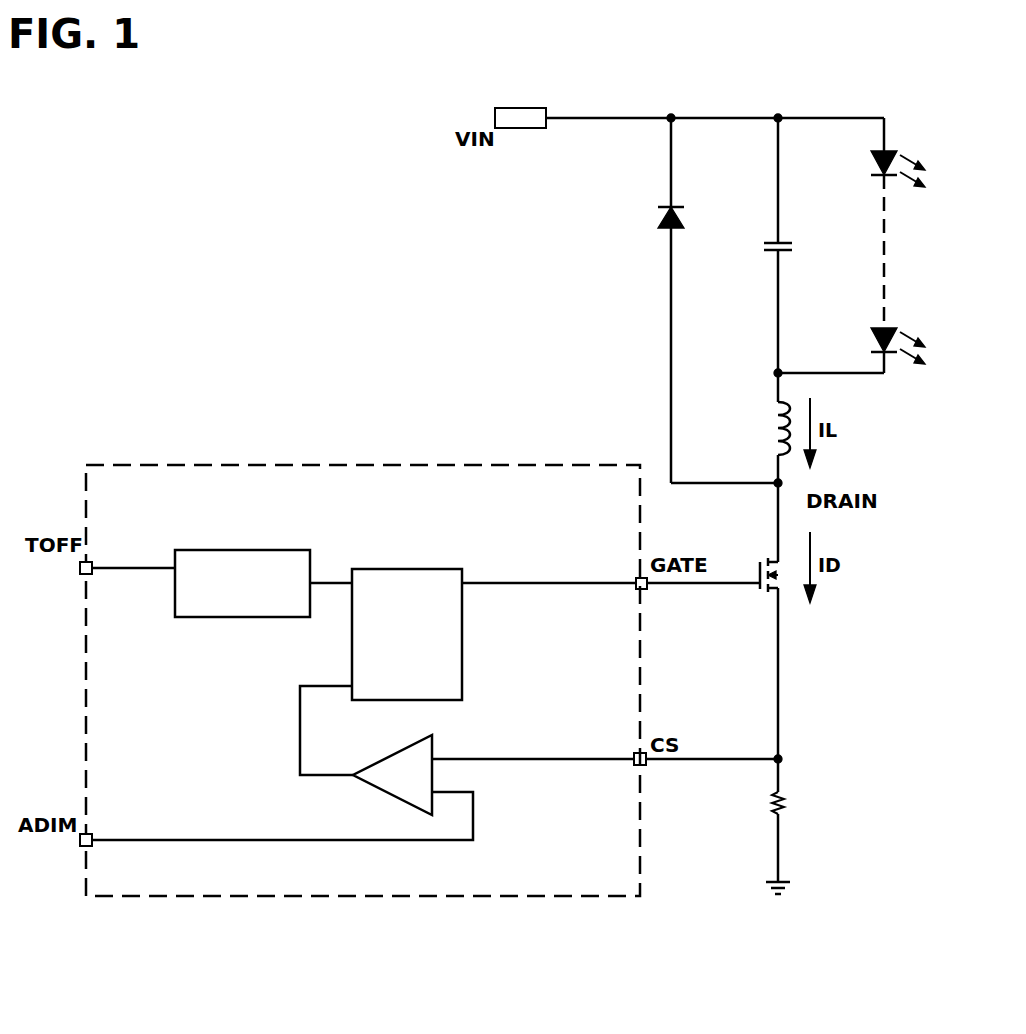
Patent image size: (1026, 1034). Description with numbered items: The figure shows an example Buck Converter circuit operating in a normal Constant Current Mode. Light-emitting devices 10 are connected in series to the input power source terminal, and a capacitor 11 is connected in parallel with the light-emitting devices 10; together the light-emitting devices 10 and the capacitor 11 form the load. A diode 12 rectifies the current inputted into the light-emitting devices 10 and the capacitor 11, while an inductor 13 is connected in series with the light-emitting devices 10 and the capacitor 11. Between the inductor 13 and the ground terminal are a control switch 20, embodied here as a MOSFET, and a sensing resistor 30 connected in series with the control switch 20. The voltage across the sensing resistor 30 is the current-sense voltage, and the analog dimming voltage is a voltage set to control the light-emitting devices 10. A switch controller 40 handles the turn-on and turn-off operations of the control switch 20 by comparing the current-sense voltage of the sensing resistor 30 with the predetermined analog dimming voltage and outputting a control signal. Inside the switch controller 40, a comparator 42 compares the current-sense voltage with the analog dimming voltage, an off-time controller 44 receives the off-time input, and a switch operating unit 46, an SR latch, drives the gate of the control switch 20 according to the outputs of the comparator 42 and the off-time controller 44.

The light-emitting devices 10 is at (890, 154).
The capacitor 11 is at (788, 243).
The diode 12 is at (676, 206).
The inductor 13 is at (776, 430).
The control switch 20 is at (783, 578).
The sensing resistor 30 is at (785, 800).
The switch controller 40 is at (358, 464).
The comparator 42 is at (390, 752).
The off-time controller 44 is at (241, 549).
The switch operating unit 46 is at (406, 568).